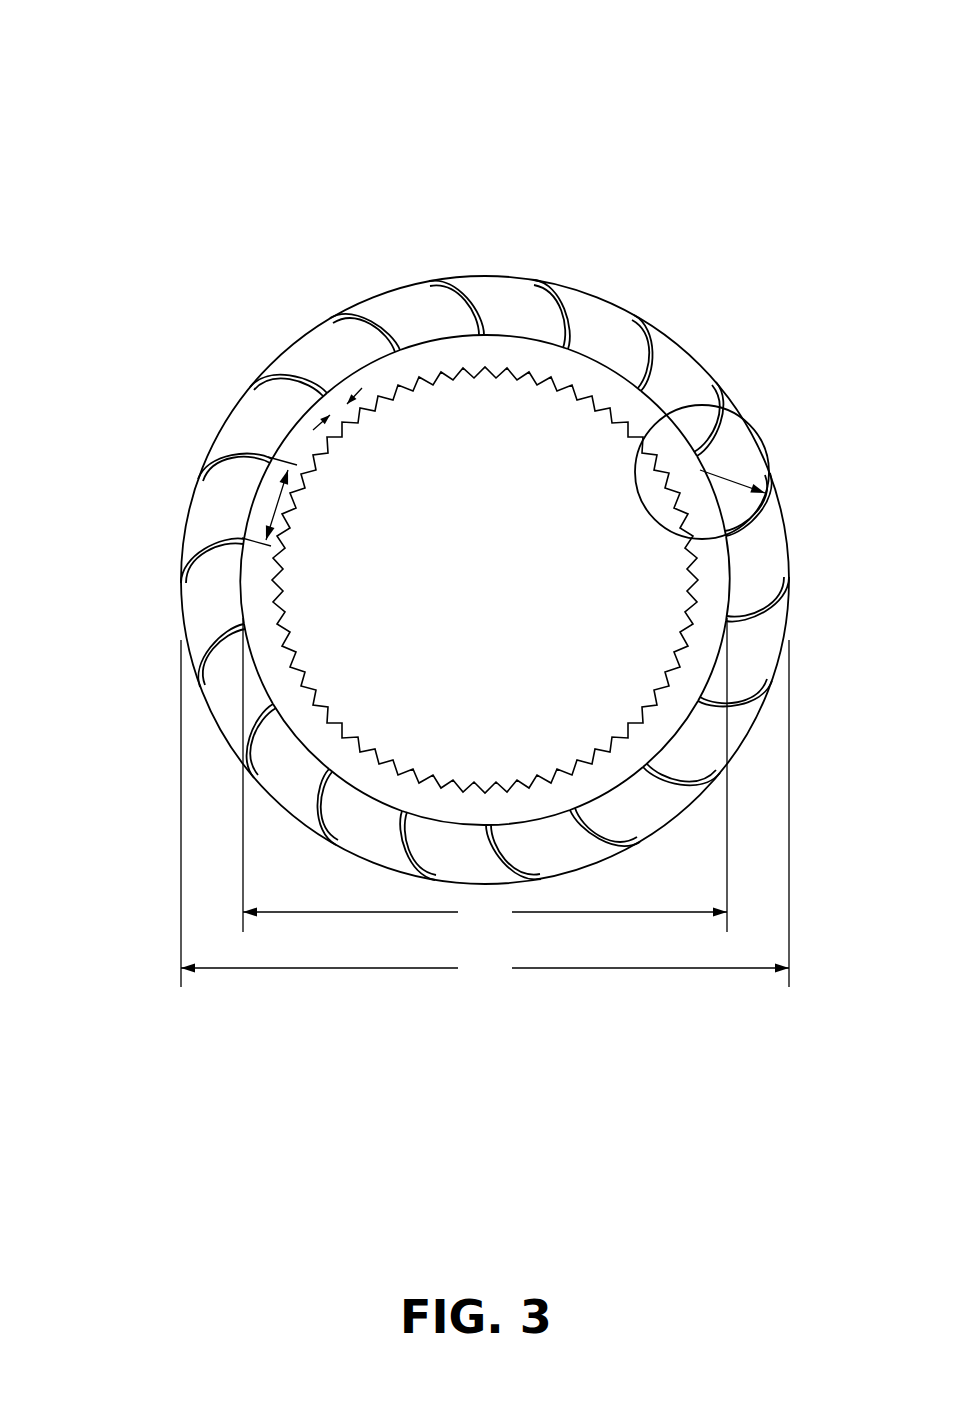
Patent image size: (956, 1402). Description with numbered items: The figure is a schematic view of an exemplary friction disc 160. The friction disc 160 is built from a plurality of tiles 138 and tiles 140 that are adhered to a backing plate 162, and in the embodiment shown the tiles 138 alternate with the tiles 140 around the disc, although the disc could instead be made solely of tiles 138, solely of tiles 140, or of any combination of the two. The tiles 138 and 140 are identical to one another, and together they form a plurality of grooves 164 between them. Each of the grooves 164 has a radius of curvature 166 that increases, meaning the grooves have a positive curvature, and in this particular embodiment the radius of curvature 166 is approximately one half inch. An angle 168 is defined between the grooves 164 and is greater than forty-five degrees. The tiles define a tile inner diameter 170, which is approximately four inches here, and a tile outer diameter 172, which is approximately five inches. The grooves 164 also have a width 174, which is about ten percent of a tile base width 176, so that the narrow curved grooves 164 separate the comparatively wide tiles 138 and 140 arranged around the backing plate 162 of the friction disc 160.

The friction disc 160 is at (238, 130).
The backing plate 162 is at (430, 375).
The grooves 164 is at (593, 298).
The tiles 138 is at (332, 348).
The tiles 140 is at (360, 304).
The angle 168 is at (450, 323).
The radius of curvature 166 is at (725, 478).
The tile inner diameter 170 is at (485, 775).
The tile outer diameter 172 is at (485, 813).
The width 174 is at (340, 407).
The tile base width 176 is at (276, 507).